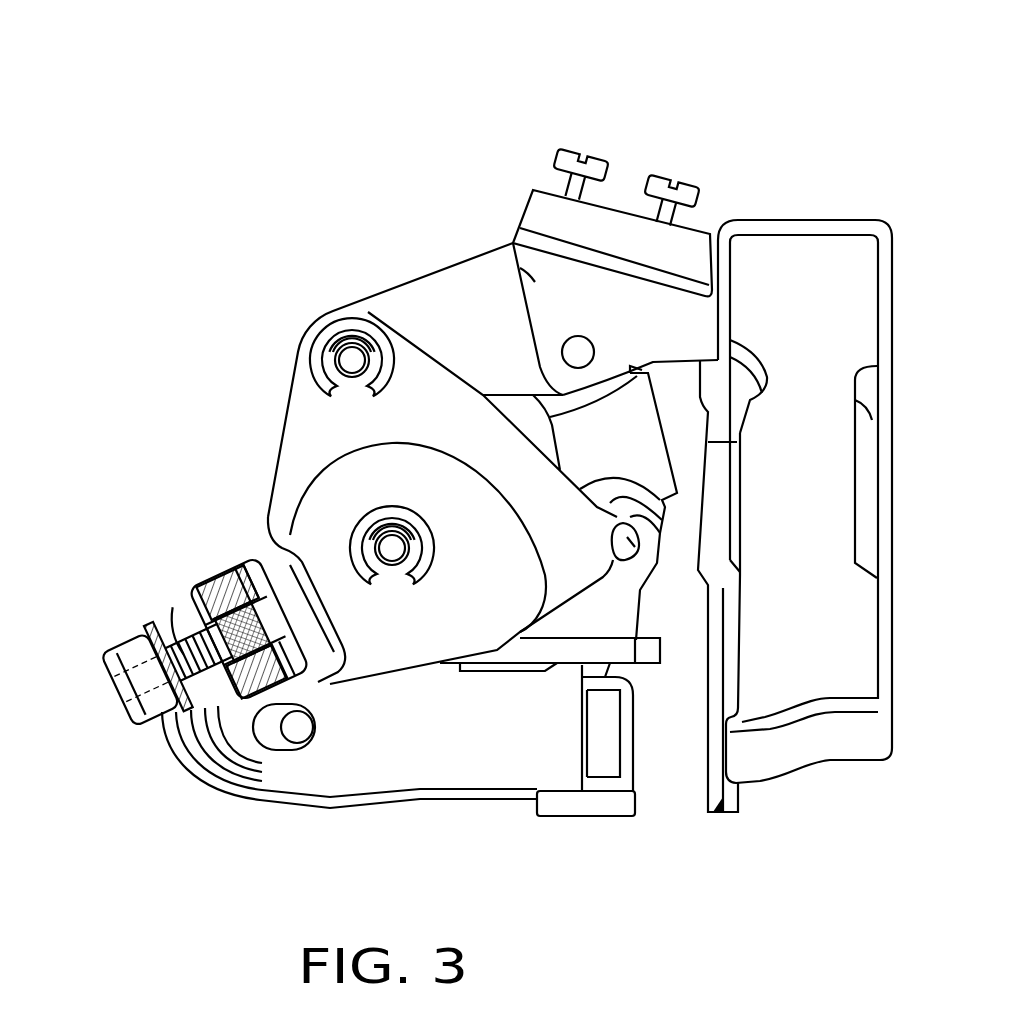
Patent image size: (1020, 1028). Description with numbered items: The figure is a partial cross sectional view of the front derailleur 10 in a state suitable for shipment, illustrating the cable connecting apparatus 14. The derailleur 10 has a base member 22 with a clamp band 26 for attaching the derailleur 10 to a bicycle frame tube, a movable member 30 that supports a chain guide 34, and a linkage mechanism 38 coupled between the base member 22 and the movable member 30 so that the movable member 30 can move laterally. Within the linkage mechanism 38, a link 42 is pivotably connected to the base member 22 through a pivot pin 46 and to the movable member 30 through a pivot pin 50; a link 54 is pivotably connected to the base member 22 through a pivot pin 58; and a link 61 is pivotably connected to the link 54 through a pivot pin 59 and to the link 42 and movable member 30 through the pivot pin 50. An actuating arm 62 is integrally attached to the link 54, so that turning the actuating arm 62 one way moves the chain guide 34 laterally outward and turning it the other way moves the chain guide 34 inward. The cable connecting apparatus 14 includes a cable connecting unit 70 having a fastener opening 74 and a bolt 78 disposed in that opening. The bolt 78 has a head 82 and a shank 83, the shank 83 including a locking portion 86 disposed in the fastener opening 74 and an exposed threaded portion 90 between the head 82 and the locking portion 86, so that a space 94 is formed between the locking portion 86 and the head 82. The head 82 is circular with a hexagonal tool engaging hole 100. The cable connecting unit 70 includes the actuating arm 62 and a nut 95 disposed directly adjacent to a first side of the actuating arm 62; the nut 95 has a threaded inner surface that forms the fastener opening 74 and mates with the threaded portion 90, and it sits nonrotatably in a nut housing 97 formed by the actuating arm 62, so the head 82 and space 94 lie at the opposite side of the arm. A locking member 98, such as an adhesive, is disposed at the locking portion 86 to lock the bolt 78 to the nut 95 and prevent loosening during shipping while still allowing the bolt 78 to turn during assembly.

The front derailleur 10 is at (420, 98).
The cable connecting apparatus 14 is at (166, 520).
The base member 22 is at (613, 607).
The clamp band 26 is at (453, 797).
The movable member 30 is at (513, 243).
The chain guide 34 is at (868, 220).
The linkage mechanism 38 is at (286, 236).
The link 42 is at (647, 437).
The pivot pin 46 is at (642, 567).
The pivot pin 50 is at (586, 345).
The link 54 is at (297, 423).
The pivot pin 58 is at (392, 557).
The pivot pin 59 is at (352, 368).
The link 61 is at (440, 298).
The actuating arm 62 is at (343, 663).
The cable connecting unit 70 is at (192, 575).
The fastener opening 74 is at (255, 750).
The bolt 78 is at (94, 632).
The head 82 is at (110, 685).
The shank 83 is at (183, 773).
The locking portion 86 is at (260, 618).
The threaded portion 90 is at (167, 638).
The space 94 is at (175, 614).
The nut 95 is at (300, 690).
The nut housing 97 is at (263, 612).
The locking member 98 is at (313, 567).
The tool engaging hole 100 is at (121, 705).